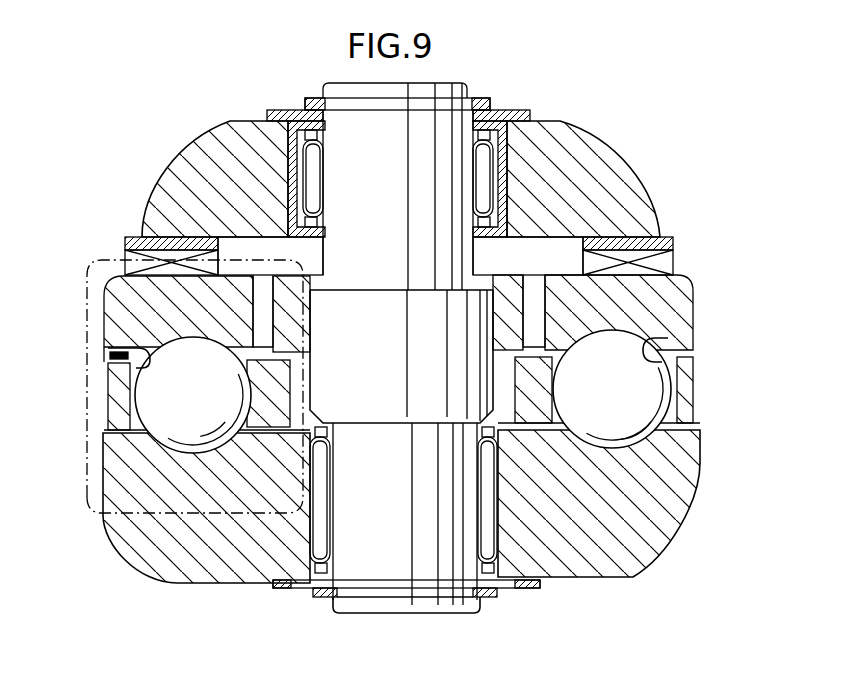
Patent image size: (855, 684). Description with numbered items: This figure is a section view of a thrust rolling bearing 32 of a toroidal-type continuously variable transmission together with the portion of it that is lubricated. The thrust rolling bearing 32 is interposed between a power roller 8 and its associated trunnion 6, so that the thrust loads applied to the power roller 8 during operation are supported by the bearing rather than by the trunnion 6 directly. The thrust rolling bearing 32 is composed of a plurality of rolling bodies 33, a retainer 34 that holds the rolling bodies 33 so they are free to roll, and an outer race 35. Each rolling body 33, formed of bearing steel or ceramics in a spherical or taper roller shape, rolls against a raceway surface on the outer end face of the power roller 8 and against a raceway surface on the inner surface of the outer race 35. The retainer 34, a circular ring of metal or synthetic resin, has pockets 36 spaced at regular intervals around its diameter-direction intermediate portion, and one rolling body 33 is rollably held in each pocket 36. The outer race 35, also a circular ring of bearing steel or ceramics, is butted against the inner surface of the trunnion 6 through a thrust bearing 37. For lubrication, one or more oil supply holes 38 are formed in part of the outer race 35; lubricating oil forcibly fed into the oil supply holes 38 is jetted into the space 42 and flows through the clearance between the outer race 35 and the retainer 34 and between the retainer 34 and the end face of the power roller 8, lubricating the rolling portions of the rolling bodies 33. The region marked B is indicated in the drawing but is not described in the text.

The trunnion 6 is at (603, 181).
The power roller 8 is at (660, 513).
The thrust rolling bearing 32 is at (181, 348).
The rolling body 33 is at (150, 410).
The retainer 34 is at (692, 412).
The outer race 35 is at (690, 290).
The pocket 36 is at (130, 348).
The thrust bearing 37 is at (665, 250).
The oil supply hole 38 is at (535, 270).
The space 42 is at (268, 365).
The envelope B is at (113, 517).